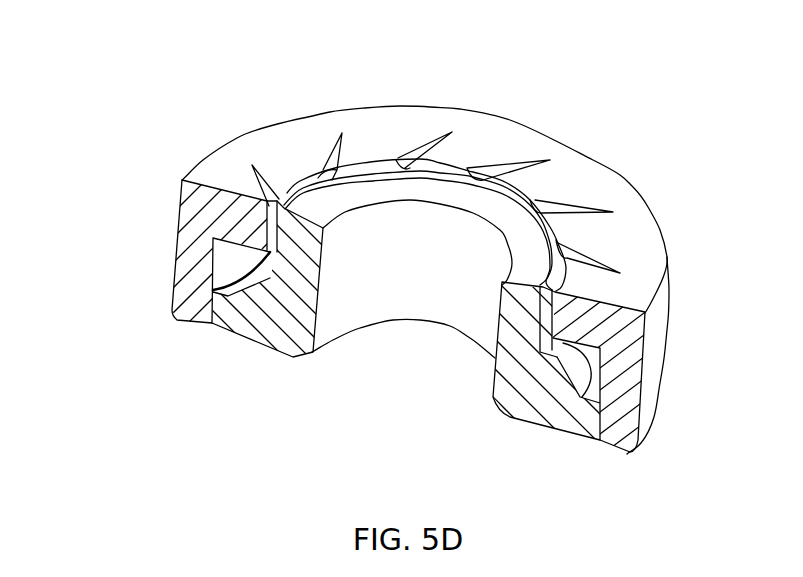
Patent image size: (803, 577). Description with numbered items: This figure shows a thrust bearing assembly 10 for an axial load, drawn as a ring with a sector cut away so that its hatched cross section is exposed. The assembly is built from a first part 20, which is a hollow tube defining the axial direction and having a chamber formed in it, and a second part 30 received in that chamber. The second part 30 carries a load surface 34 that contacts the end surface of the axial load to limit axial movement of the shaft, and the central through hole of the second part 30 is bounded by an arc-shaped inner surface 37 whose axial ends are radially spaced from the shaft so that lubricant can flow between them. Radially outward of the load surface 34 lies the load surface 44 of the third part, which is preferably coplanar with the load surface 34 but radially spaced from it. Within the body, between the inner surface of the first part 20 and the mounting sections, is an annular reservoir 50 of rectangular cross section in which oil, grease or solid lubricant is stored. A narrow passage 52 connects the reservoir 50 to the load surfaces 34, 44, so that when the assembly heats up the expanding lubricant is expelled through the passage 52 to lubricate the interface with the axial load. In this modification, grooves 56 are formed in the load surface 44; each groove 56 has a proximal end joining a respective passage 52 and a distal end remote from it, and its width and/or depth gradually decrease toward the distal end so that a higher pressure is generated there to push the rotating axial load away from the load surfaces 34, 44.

The thrust bearing assembly 10 is at (391, 259).
The first part 20 is at (623, 380).
The second part 30 is at (258, 318).
The load surface 34 is at (495, 195).
The inner surface 37 is at (367, 297).
The load surface 44 is at (580, 177).
The annular reservoir 50 is at (220, 258).
The passage 52 is at (332, 177).
The grooves 56 is at (336, 135).